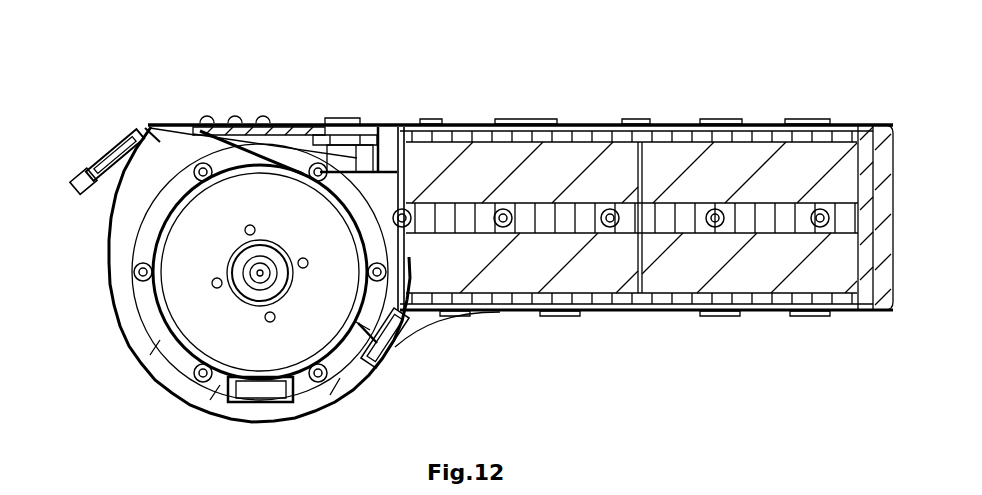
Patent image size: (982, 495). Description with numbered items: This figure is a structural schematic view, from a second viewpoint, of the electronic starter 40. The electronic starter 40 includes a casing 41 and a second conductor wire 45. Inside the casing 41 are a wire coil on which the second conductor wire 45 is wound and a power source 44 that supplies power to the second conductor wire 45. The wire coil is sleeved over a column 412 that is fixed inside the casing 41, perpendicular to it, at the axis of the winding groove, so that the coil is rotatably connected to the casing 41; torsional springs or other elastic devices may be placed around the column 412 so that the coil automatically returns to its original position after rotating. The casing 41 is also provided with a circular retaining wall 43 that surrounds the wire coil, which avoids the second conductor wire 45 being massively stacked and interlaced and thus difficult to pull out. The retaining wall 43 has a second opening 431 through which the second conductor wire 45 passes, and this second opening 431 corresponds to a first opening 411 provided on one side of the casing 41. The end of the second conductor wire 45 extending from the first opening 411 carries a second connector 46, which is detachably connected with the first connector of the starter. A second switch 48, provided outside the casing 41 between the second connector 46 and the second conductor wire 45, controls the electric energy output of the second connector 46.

The electronic starter 40 is at (486, 36).
The casing 41 is at (605, 123).
The first opening 411 is at (156, 127).
The column 412 is at (260, 282).
The circular retaining wall 43 is at (180, 205).
The second opening 431 is at (254, 168).
The power source 44 is at (723, 150).
The second conductor wire 45 is at (143, 152).
The second connector 46 is at (79, 197).
The second switch 48 is at (348, 122).